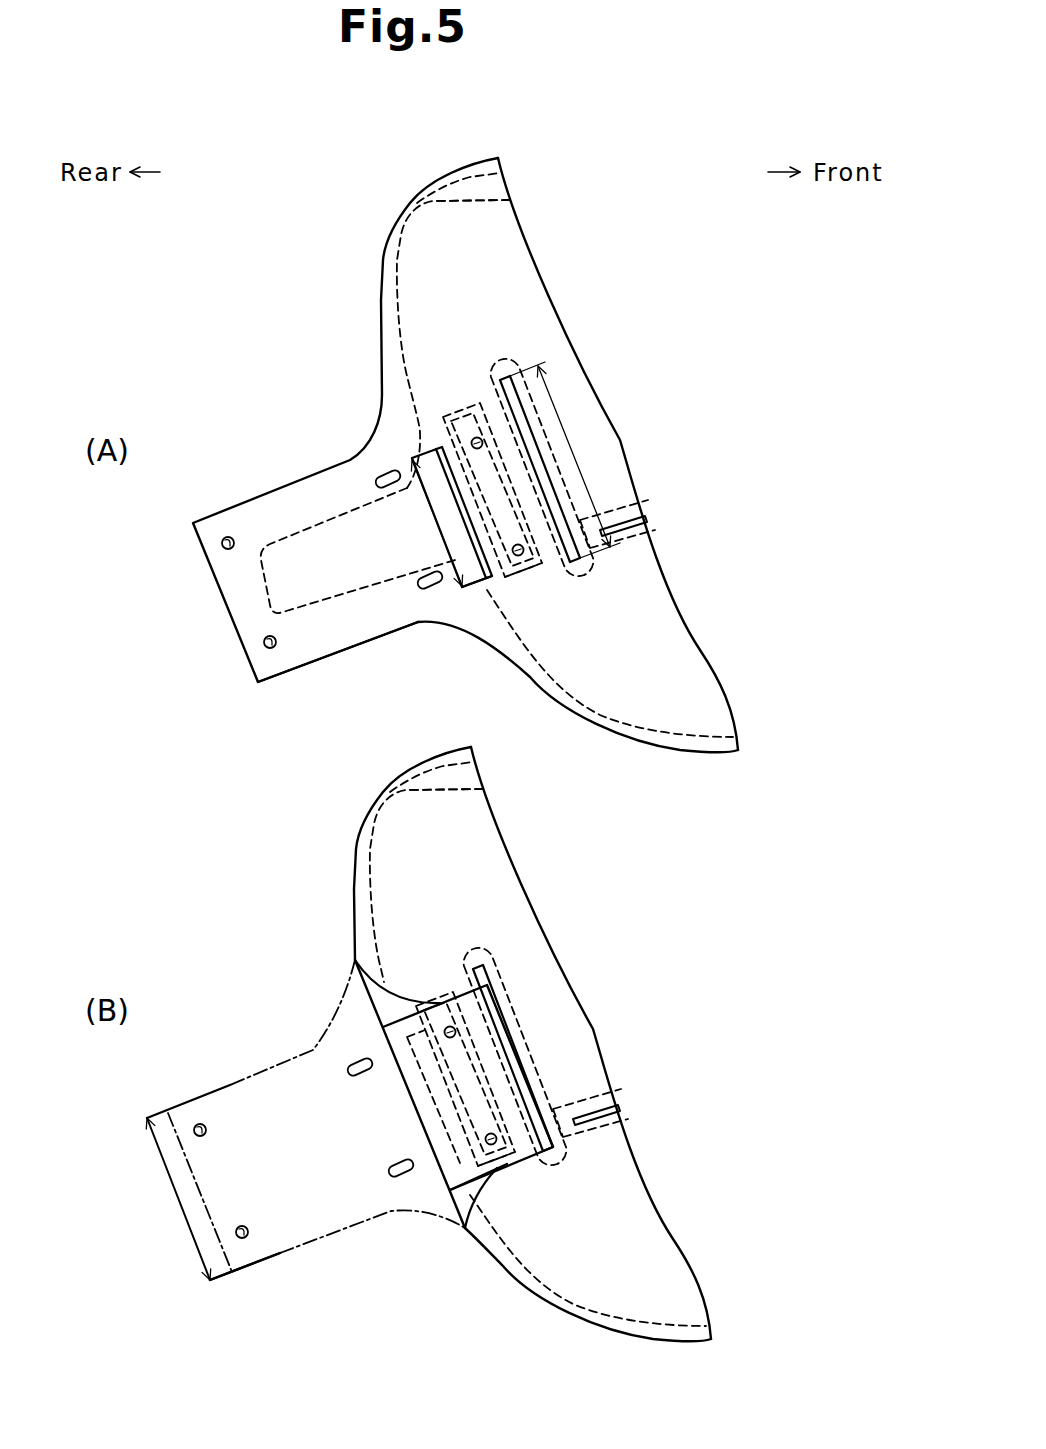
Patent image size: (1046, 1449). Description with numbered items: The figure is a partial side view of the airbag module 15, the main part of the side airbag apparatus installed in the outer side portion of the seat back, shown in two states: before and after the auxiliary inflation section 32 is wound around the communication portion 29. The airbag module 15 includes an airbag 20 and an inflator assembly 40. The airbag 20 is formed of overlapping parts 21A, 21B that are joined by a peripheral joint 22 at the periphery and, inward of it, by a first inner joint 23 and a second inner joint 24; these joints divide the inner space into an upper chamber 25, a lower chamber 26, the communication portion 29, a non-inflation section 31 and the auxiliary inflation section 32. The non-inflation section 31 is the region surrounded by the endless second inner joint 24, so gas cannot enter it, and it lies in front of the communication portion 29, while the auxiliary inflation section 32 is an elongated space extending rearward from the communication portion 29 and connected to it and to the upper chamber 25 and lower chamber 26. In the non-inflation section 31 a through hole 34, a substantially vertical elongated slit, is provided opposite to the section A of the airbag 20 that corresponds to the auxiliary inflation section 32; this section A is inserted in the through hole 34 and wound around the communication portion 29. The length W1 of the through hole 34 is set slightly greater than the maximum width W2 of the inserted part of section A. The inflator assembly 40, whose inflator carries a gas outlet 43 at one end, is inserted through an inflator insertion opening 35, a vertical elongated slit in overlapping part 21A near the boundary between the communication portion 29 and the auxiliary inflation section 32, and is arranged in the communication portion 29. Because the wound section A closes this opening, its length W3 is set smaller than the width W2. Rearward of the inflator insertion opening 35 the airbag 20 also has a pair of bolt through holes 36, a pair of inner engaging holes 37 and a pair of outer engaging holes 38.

In FIG. 5A, the airbag module 15 is at (323, 390).
In FIG. 5B, the airbag module 15 is at (298, 972).
In FIG. 5A, the airbag 20 is at (380, 300).
In FIG. 5B, the airbag 20 is at (353, 889).
In FIG. 5A, the overlapping part 21A is at (391, 251).
In FIG. 5B, the overlapping part 21A is at (364, 840).
In FIG. 5A, the overlapping part 21B is at (398, 344).
In FIG. 5B, the overlapping part 21B is at (372, 885).
In FIG. 5A, the peripheral joint 22 is at (467, 182).
In FIG. 5B, the peripheral joint 22 is at (440, 771).
In FIG. 5A, the first inner joint 23 is at (490, 198).
In FIG. 5B, the first inner joint 23 is at (463, 787).
In FIG. 5A, the second inner joint 24 is at (493, 372).
In FIG. 5B, the second inner joint 24 is at (466, 960).
In FIG. 5A, the upper chamber 25 is at (589, 454).
In FIG. 5B, the upper chamber 25 is at (563, 1043).
In FIG. 5A, the lower chamber 26 is at (578, 671).
In FIG. 5B, the lower chamber 26 is at (588, 1268).
In FIG. 5A, the communication portion 29 is at (489, 477).
In FIG. 5B, the communication portion 29 is at (461, 1063).
In FIG. 5A, the non-inflation section 31 is at (505, 362).
In FIG. 5B, the non-inflation section 31 is at (478, 951).
In FIG. 5A, the auxiliary inflation section 32 is at (358, 550).
In FIG. 5B, the auxiliary inflation section 32 is at (306, 1120).
In FIG. 5A, the through hole 34 is at (572, 575).
In FIG. 5B, the through hole 34 is at (547, 1167).
In FIG. 5A, the inflator insertion opening 35 is at (428, 445).
In FIG. 5B, the inflator insertion opening 35 is at (418, 1097).
In FIG. 5A, the bolt through holes 36 is at (515, 545).
In FIG. 5B, the bolt through holes 36 is at (488, 1134).
In FIG. 5A, the inner engaging holes 37 is at (375, 482).
In FIG. 5B, the inner engaging holes 37 is at (348, 1072).
In FIG. 5A, the outer engaging holes 38 is at (224, 546).
In FIG. 5B, the outer engaging holes 38 is at (206, 1124).
In FIG. 5A, the inflator assembly 40 is at (490, 603).
In FIG. 5B, the inflator assembly 40 is at (452, 1194).
In FIG. 5A, the gas outlet 43 is at (527, 576).
In FIG. 5B, the gas outlet 43 is at (503, 1165).
In FIG. 5A, the section A is at (318, 656).
In FIG. 5B, the section A is at (292, 1250).
In FIG. 5A, the length of the through hole W1 is at (577, 447).
In FIG. 5B, the width of section A W2 is at (174, 1198).
In FIG. 5A, the length of the inflator insertion opening W3 is at (435, 520).